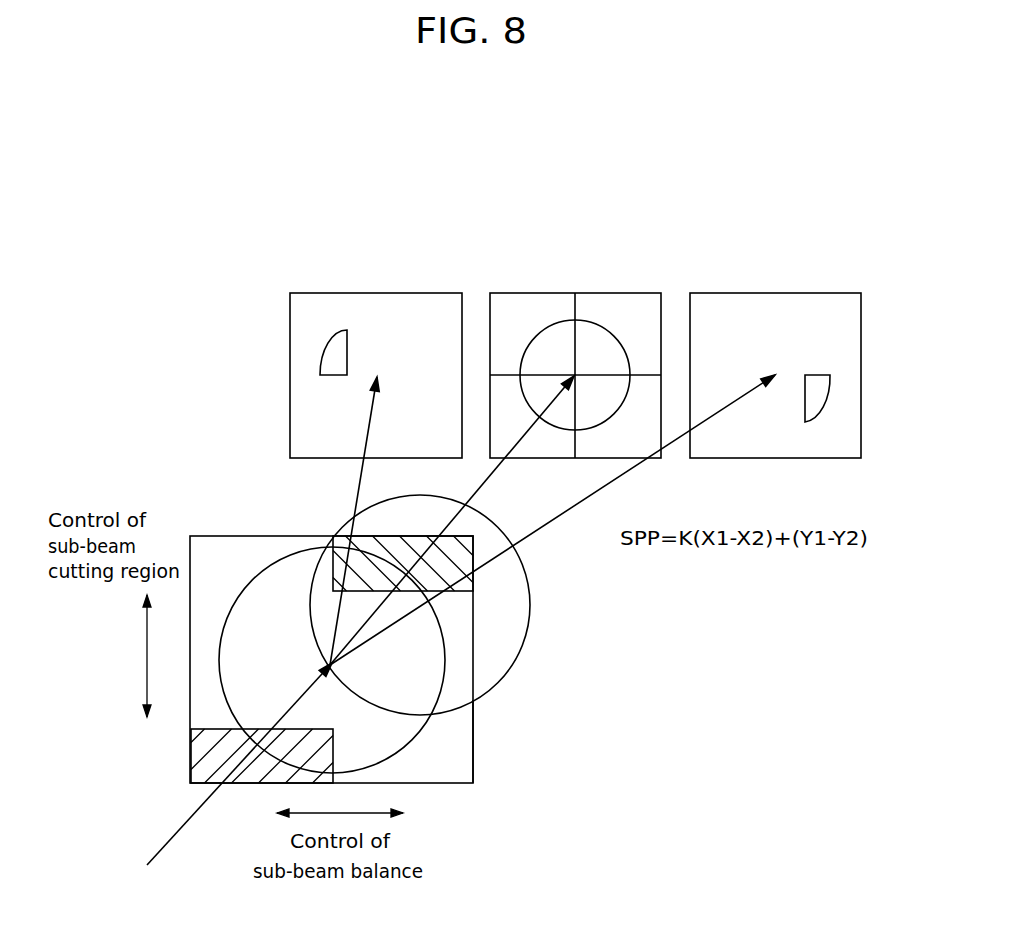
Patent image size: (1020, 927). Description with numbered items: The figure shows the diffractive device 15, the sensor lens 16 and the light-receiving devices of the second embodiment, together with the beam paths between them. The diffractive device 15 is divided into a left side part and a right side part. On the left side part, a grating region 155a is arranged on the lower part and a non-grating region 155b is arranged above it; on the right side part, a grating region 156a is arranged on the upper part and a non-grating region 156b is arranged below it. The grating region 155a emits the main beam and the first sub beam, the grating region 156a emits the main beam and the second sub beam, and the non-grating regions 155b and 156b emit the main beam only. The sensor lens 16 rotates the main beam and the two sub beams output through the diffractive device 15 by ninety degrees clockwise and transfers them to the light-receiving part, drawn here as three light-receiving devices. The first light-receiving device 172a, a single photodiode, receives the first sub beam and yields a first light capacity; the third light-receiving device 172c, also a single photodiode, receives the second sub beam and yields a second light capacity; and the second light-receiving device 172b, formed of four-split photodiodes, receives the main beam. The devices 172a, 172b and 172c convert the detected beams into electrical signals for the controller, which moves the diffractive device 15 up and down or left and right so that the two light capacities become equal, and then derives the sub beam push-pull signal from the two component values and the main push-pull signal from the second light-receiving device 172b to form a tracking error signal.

The diffractive device 15 is at (284, 536).
The sensor lens 16 is at (523, 630).
The grating region 155a is at (195, 760).
The non-grating region 155b is at (209, 546).
The grating region 156a is at (467, 585).
The non-grating region 156b is at (467, 747).
The first light-receiving device 172a is at (382, 293).
The second light-receiving device 172b is at (596, 293).
The third light-receiving device 172c is at (782, 293).